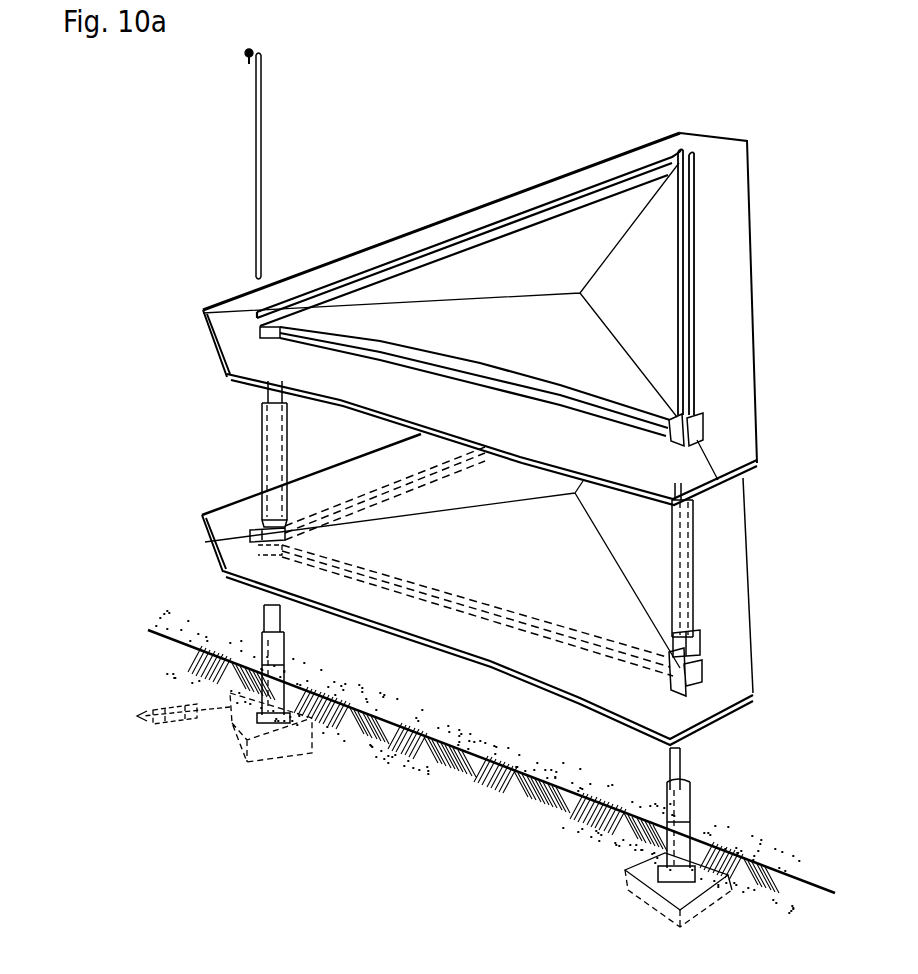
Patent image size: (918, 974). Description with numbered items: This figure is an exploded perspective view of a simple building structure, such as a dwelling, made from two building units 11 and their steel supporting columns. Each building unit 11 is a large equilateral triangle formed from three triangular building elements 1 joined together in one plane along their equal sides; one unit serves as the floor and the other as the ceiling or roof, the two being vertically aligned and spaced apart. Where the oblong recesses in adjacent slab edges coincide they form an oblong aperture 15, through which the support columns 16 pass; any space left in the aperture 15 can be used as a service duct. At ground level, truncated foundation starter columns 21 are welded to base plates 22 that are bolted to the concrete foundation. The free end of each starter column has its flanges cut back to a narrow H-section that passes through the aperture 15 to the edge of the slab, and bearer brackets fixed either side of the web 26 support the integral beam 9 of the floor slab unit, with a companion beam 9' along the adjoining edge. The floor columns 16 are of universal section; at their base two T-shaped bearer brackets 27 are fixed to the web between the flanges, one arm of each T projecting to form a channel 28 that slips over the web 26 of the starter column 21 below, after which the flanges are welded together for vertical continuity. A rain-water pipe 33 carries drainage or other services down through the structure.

The building element 1 is at (737, 509).
The integral beam 9 is at (469, 422).
The edge strip 9' is at (661, 264).
The building unit 11 is at (752, 308).
The oblong aperture 15 is at (706, 416).
The support column 16 is at (692, 576).
The truncated foundation starter column 21 is at (668, 799).
The base plate 22 is at (672, 880).
The web 26 is at (279, 466).
The T-shaped bearer bracket 27 is at (250, 535).
The channel 28 is at (698, 653).
The rain-water pipe 33 is at (258, 156).